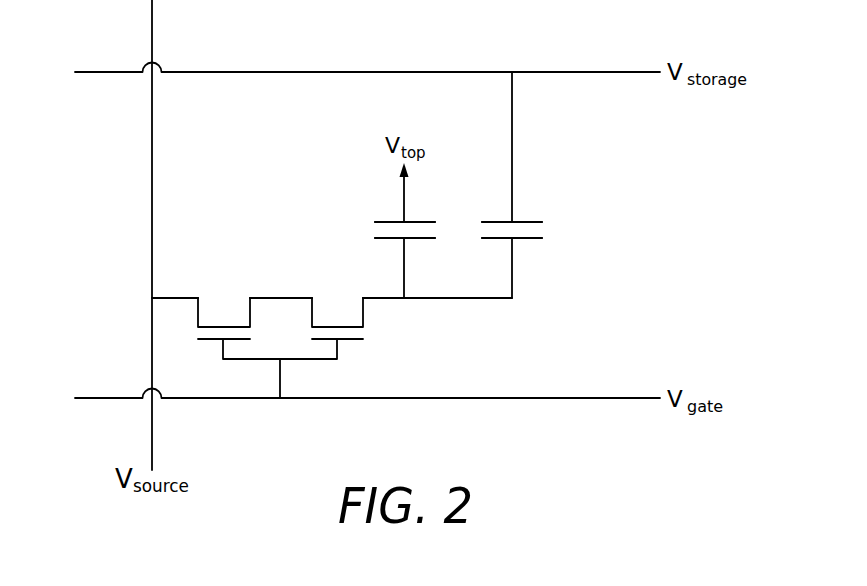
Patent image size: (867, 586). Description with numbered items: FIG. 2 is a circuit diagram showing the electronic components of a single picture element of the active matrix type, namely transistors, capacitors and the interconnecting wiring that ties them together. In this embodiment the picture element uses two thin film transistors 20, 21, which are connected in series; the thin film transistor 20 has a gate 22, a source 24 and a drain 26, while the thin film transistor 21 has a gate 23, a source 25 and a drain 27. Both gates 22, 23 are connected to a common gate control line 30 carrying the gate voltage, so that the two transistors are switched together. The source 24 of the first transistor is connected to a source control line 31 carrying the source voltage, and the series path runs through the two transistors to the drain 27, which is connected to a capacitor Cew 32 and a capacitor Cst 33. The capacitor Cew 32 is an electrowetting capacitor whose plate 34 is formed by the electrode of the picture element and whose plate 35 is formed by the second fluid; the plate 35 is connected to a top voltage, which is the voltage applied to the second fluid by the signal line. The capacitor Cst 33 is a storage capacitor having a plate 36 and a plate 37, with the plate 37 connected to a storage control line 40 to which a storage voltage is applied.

The thin film transistor 20 is at (220, 326).
The thin film transistor 21 is at (336, 326).
The gate 22 is at (223, 346).
The gate 23 is at (337, 346).
The source 24 is at (181, 297).
The source 25 is at (303, 297).
The drain 26 is at (255, 297).
The drain 27 is at (372, 297).
The gate control line 30 is at (462, 399).
The source control line 31 is at (152, 431).
The capacitor Cew 32 is at (399, 232).
The capacitor Cst 33 is at (508, 232).
The plate 34 is at (430, 240).
The plate 35 is at (429, 219).
The plate 36 is at (536, 240).
The plate 37 is at (537, 219).
The storage control line 40 is at (373, 72).